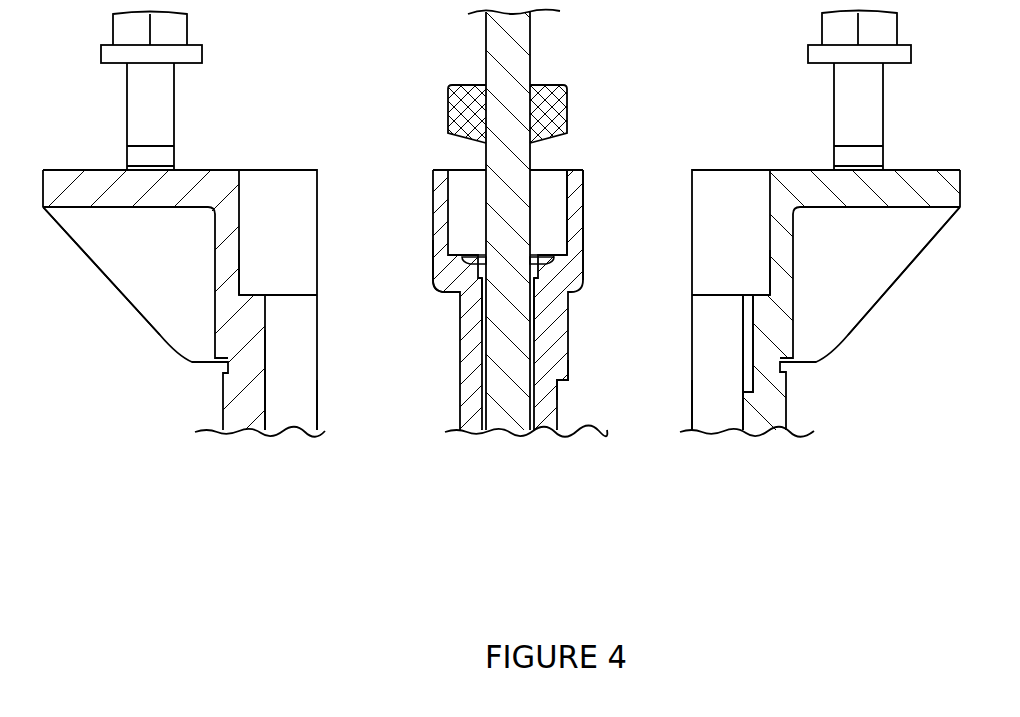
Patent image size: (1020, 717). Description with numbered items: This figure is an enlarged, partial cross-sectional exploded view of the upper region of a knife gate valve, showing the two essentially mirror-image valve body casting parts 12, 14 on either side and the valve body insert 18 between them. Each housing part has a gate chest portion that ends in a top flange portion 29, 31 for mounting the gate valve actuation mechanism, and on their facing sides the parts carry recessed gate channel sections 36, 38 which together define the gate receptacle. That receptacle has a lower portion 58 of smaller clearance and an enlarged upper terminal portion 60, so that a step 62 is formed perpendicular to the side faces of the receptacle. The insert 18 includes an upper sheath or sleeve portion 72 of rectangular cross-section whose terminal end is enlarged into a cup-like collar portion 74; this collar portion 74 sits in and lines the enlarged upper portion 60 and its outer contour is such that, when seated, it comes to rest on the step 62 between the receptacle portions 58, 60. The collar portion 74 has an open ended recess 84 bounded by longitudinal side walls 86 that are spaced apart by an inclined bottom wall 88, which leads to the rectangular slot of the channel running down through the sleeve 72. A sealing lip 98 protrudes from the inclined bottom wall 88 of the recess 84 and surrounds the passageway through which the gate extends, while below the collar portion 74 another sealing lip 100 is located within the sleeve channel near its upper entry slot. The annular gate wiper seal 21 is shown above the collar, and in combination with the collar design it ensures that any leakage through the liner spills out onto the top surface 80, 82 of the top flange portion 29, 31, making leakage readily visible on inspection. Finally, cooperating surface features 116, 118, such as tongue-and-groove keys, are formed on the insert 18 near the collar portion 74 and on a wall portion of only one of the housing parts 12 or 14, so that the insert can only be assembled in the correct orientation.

The valve body casting part 12 is at (198, 383).
The valve body casting part 14 is at (807, 397).
The valve body insert 18 is at (453, 409).
The gate wiper seal 21 is at (566, 100).
The top flange portion 29 is at (140, 198).
The top flange portion 31 is at (848, 197).
The gate channel section 36 is at (304, 387).
The gate channel section 38 is at (728, 345).
The lower portion 58 is at (302, 343).
The upper terminal portion 60 is at (305, 273).
The step 62 is at (252, 292).
The sleeve portion 72 is at (463, 370).
The collar portion 74 is at (450, 283).
The top surface 80 is at (203, 170).
The top surface 82 is at (912, 170).
The open ended recess 84 is at (553, 205).
The longitudinal side wall 86 is at (575, 190).
The inclined bottom wall 88 is at (463, 252).
The sealing lip 98 is at (552, 250).
The sealing lip 100 is at (522, 300).
The surface feature 116 is at (565, 380).
The surface feature 118 is at (748, 377).